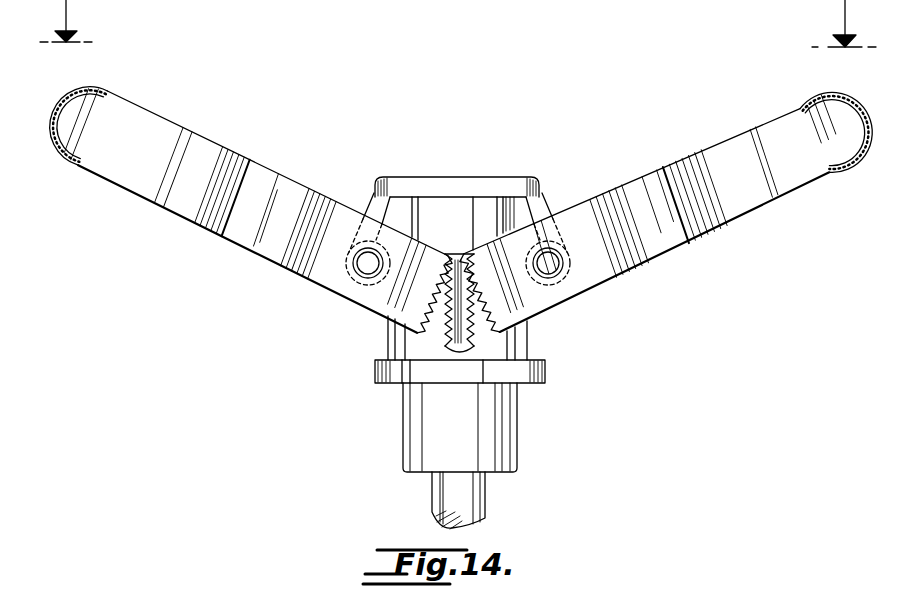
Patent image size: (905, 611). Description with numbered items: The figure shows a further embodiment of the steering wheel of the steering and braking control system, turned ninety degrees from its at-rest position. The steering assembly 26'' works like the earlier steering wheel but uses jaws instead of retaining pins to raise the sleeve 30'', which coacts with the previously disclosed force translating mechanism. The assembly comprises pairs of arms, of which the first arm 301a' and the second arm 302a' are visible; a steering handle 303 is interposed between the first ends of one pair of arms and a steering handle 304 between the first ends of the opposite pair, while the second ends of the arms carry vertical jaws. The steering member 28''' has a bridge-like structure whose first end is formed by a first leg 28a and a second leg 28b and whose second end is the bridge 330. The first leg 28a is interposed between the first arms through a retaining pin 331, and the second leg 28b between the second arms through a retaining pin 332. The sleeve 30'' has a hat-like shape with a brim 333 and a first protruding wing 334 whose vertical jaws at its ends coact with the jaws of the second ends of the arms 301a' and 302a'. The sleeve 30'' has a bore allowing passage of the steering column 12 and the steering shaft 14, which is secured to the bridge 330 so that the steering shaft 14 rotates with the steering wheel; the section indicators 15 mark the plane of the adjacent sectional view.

The steering column 12 is at (517, 418).
The steering shaft 14 is at (486, 498).
The section line 15- 15 is at (458, 34).
The steering assembly 26'' is at (457, 276).
The steering member 28''' is at (468, 213).
The first leg 28a is at (537, 203).
The second leg 28b is at (372, 203).
The sleeve 30'' is at (496, 278).
The first arm 301a' is at (681, 234).
The second arm 302a' is at (234, 230).
The steering handle 303 is at (838, 173).
The steering handle 304 is at (84, 167).
The bridge 330 is at (432, 176).
The retaining pin 331 is at (560, 271).
The retaining pin 332 is at (358, 274).
The brim 333 is at (377, 373).
The first protruding wing 334 is at (447, 339).